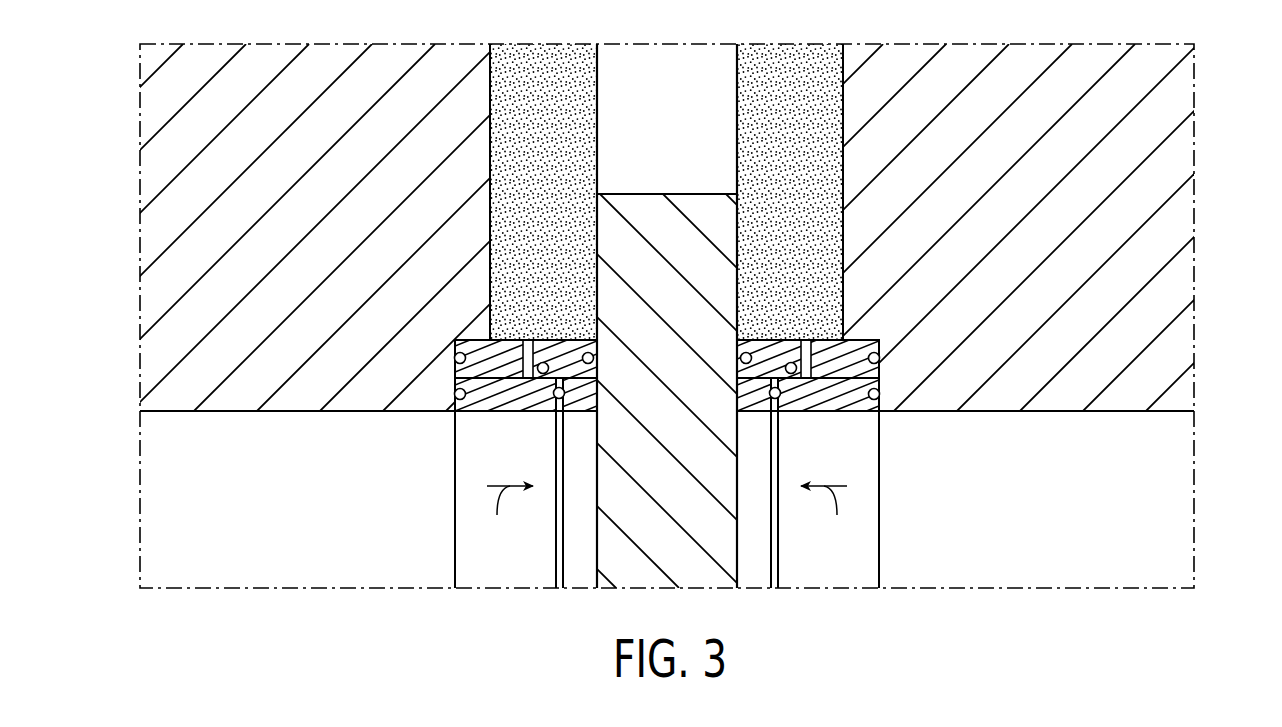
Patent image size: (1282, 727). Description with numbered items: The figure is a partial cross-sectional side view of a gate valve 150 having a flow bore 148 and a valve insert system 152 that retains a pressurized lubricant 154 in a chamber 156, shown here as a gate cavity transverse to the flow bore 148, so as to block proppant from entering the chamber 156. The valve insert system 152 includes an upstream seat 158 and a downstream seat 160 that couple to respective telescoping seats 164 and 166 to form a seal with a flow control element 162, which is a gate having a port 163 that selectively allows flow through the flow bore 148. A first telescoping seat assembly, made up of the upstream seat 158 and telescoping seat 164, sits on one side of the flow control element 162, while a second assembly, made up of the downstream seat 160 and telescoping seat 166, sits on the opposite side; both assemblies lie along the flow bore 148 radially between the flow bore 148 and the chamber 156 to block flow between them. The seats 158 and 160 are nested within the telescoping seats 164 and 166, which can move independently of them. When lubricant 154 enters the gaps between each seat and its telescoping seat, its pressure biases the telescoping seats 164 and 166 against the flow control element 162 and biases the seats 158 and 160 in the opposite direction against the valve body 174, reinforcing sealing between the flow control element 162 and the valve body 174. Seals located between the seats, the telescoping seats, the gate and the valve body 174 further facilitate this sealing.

The flow bore 148 is at (1054, 413).
The gate valve 150 is at (1163, 110).
The valve insert system 152 is at (389, 260).
The lubricant 154 is at (517, 190).
The chamber 156 is at (846, 187).
The upstream seat 158 is at (480, 396).
The downstream seat 160 is at (857, 397).
The flow control element 162 is at (660, 540).
The port 163 is at (683, 122).
The telescoping seat 164 is at (578, 408).
The telescoping seat 166 is at (753, 386).
The valve body 174 is at (286, 297).